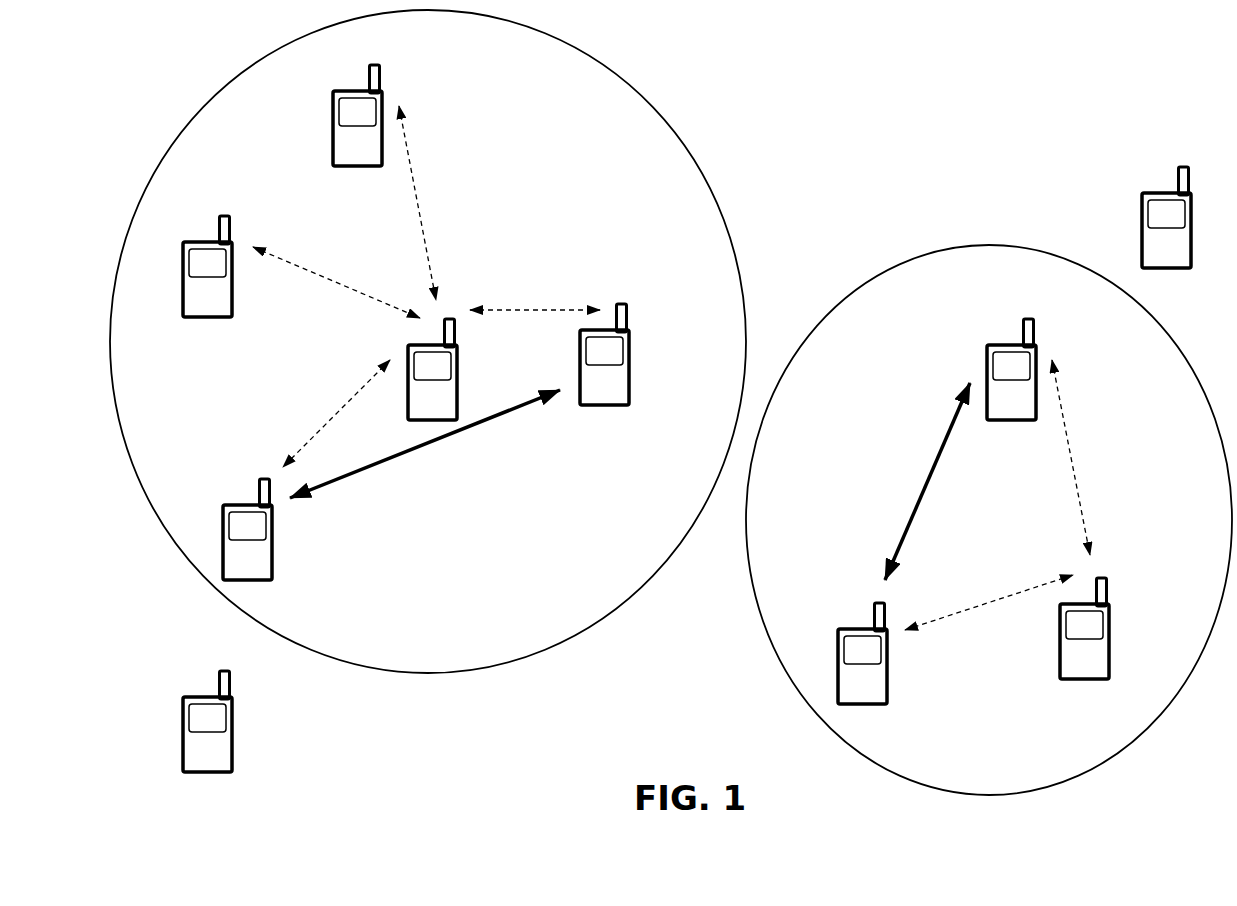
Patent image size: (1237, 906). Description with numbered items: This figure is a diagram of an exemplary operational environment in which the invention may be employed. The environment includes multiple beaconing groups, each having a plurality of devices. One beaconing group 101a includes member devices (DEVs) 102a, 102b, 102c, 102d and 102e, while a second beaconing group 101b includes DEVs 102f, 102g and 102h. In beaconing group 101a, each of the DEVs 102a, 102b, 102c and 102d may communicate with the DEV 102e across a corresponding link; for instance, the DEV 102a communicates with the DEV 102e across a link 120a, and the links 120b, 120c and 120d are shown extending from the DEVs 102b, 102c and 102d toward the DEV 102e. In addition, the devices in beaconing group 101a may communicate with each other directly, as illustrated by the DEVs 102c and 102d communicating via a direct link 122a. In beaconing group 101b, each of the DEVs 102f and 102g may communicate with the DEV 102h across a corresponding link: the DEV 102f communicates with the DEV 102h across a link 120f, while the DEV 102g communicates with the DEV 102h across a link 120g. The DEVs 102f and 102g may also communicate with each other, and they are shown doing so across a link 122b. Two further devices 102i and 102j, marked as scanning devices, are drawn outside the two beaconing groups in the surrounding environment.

The beaconing group 101a is at (632, 87).
The beaconing group 101b is at (1023, 248).
The member device (DEV) 102a is at (233, 237).
The member device (DEV) 102b is at (384, 88).
The member device (DEV) 102c is at (260, 488).
The member device (DEV) 102d is at (631, 322).
The member device (DEV) 102e is at (459, 365).
The device (DEV) 102f is at (888, 613).
The device (DEV) 102g is at (1037, 335).
The device (DEV) 102h is at (1111, 615).
The device 102i is at (233, 690).
The device 102j is at (1142, 200).
The link 120a is at (307, 270).
The link 120b is at (417, 190).
The link 120c is at (342, 408).
The link 120d is at (558, 310).
The link 120f is at (962, 614).
The link 120g is at (1073, 458).
The direct link 122a is at (488, 420).
The link 122b is at (936, 465).